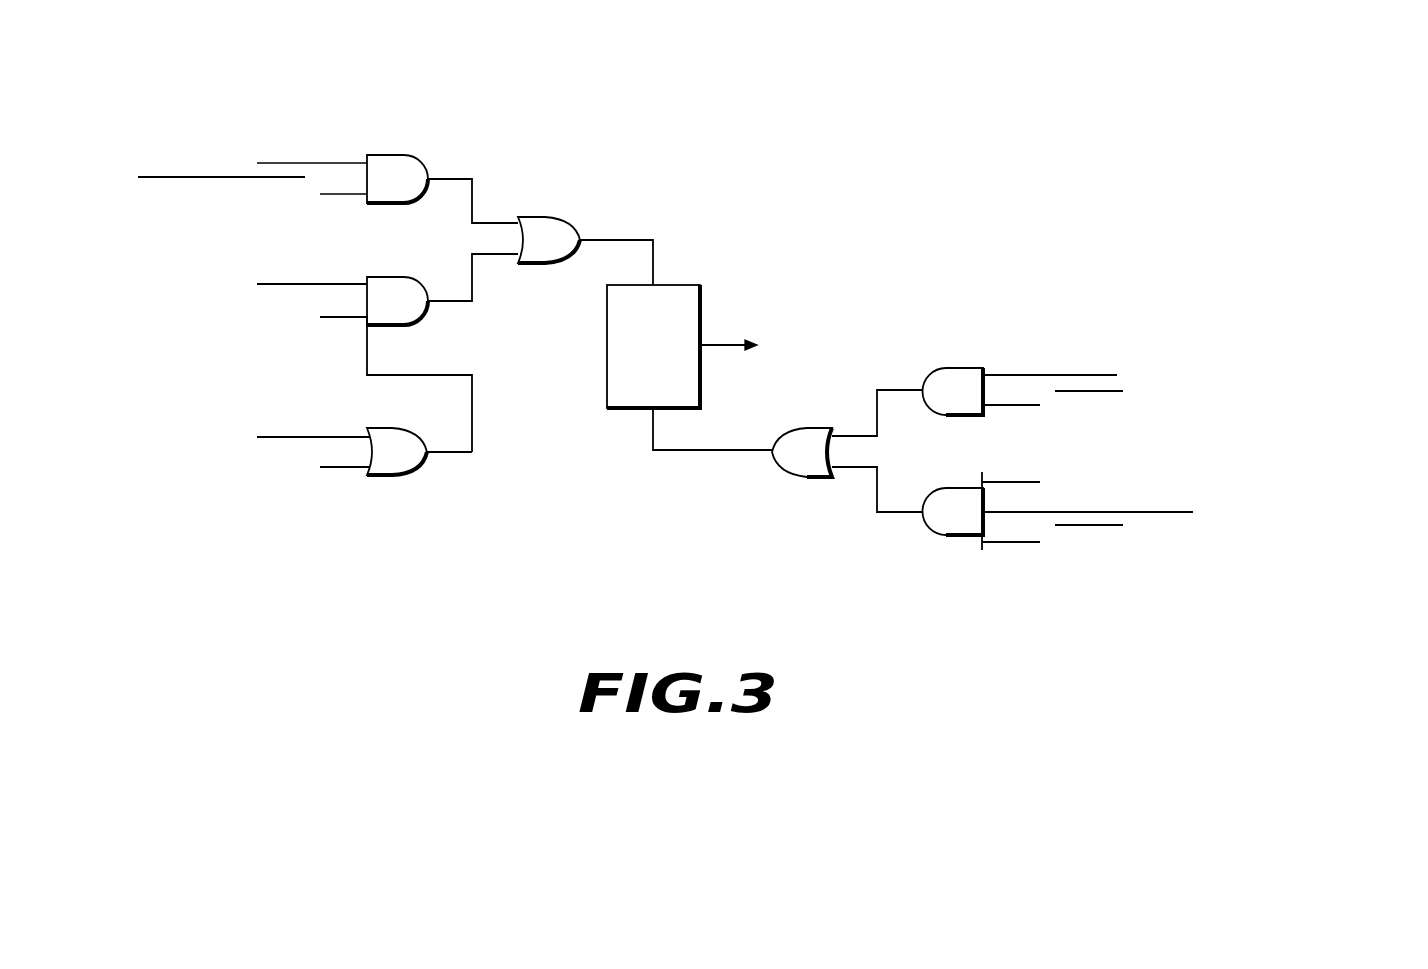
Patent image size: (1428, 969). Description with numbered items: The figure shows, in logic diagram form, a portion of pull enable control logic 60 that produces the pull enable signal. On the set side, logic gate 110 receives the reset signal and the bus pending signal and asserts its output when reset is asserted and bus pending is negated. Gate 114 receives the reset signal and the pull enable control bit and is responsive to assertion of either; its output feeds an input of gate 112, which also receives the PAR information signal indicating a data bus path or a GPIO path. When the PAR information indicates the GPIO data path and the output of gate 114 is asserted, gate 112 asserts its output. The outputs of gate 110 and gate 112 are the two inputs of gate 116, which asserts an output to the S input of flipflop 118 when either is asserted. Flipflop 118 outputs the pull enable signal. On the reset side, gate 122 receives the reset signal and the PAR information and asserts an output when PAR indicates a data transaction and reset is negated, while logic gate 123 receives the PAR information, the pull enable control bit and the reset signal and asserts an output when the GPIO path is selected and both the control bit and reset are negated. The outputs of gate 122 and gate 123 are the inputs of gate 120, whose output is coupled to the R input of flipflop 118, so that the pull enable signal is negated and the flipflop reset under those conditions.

The pull enable control logic 60 is at (1088, 250).
The logic gate 110 is at (390, 153).
The gate 112 is at (387, 327).
The gate 114 is at (390, 477).
The gate 116 is at (538, 215).
The flipflop 118 is at (607, 353).
The gate 120 is at (808, 478).
The gate 122 is at (962, 418).
The logic gate 123 is at (962, 540).